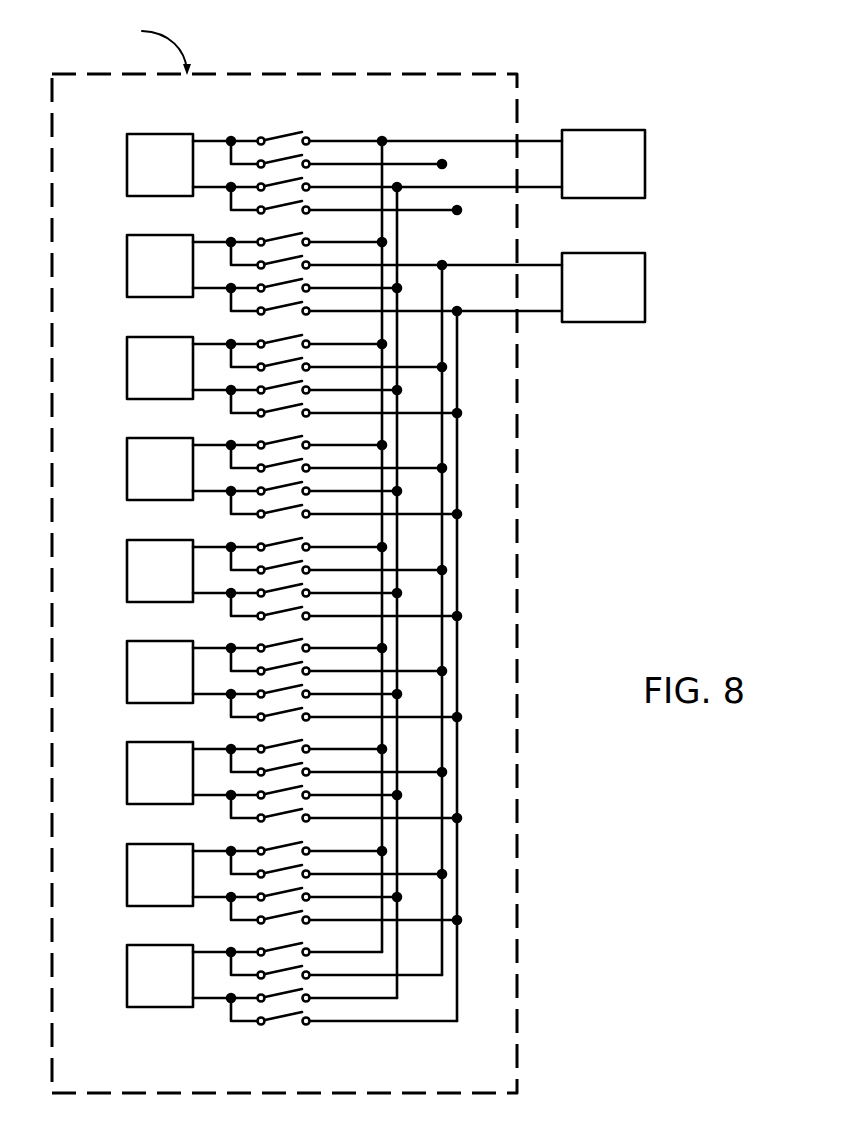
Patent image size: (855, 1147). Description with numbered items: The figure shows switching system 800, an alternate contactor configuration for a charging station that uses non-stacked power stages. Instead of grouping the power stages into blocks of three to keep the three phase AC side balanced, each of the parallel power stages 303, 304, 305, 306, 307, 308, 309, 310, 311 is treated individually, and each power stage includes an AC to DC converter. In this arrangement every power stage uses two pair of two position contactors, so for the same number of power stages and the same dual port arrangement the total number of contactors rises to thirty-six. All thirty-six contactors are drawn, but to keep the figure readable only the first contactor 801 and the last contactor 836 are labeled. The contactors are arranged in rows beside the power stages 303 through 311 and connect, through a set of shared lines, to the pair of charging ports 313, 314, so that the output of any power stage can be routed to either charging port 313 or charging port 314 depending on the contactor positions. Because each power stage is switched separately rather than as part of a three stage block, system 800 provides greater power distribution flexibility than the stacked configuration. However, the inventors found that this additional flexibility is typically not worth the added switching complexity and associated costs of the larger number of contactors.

The switching system 800 is at (629, 950).
The contactor 801 is at (284, 128).
The contactor 836 is at (285, 1028).
The power stage 303 is at (294, 154).
The power stage 304 is at (294, 274).
The power stage 305 is at (294, 376).
The power stage 306 is at (294, 477).
The power stage 307 is at (294, 579).
The power stage 308 is at (294, 680).
The power stage 309 is at (294, 781).
The power stage 310 is at (294, 883).
The power stage 311 is at (292, 1004).
The charging port 313 is at (647, 178).
The charging port 314 is at (647, 300).